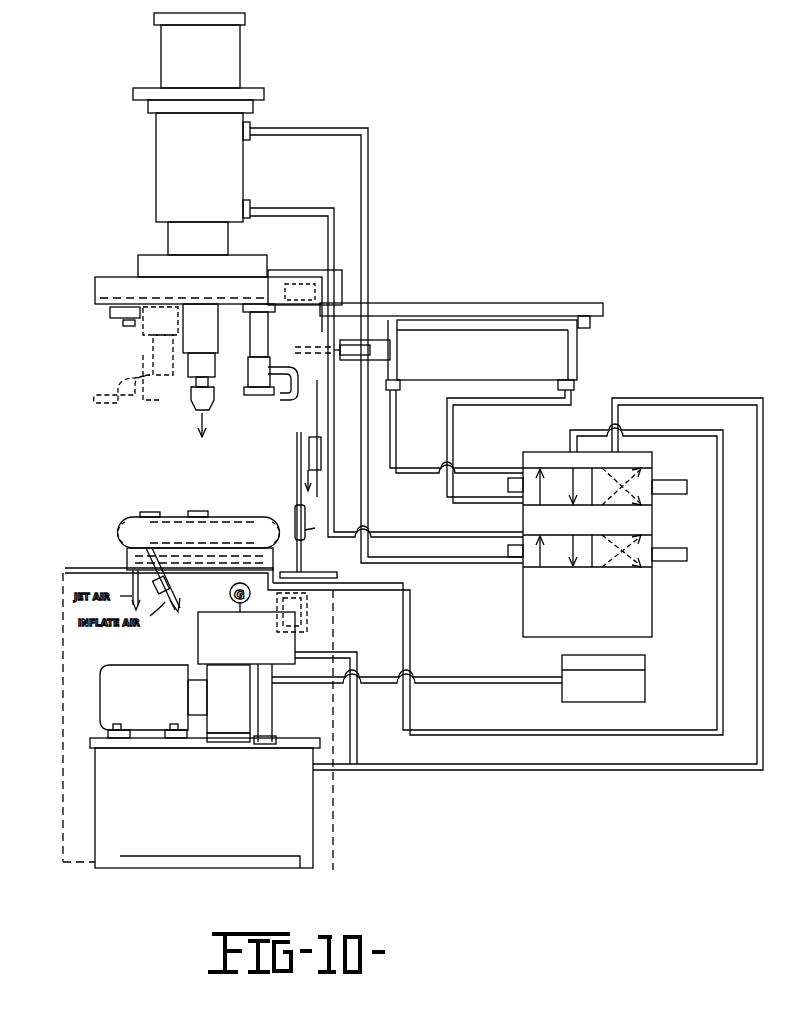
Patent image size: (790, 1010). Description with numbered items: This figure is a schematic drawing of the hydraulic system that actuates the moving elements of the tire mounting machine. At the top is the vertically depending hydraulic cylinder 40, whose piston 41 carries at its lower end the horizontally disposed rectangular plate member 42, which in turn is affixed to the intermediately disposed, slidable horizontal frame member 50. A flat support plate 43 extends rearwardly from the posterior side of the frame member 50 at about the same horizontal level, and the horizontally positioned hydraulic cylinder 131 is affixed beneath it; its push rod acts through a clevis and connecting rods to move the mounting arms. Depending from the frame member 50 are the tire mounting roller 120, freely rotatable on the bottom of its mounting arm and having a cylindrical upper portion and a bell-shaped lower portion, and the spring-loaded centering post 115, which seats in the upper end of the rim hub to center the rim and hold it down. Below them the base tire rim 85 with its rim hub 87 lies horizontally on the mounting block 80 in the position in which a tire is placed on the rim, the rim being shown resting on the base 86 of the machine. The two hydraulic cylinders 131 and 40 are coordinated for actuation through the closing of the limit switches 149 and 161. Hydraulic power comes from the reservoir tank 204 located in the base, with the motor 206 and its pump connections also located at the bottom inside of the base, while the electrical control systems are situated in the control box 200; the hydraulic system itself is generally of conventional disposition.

The hydraulic cylinder 40 is at (163, 160).
The piston 41 is at (228, 238).
The rectangular plate member 42 is at (148, 258).
The support plate 43 is at (528, 311).
The horizontal frame member 50 is at (322, 274).
The base support 80 is at (125, 554).
The base tire rim 85 is at (160, 512).
The inflatable bag 86 is at (125, 531).
The rim hub 87 is at (200, 511).
The centering post 115 is at (187, 400).
The tire mounting roller 120 is at (259, 377).
The hydraulic cylinder 131 is at (520, 361).
The limit switch 149 is at (112, 317).
The limit switch 161 is at (302, 510).
The control box 200 is at (280, 802).
The reservoir tank 204 is at (148, 672).
The motor 206 is at (245, 721).